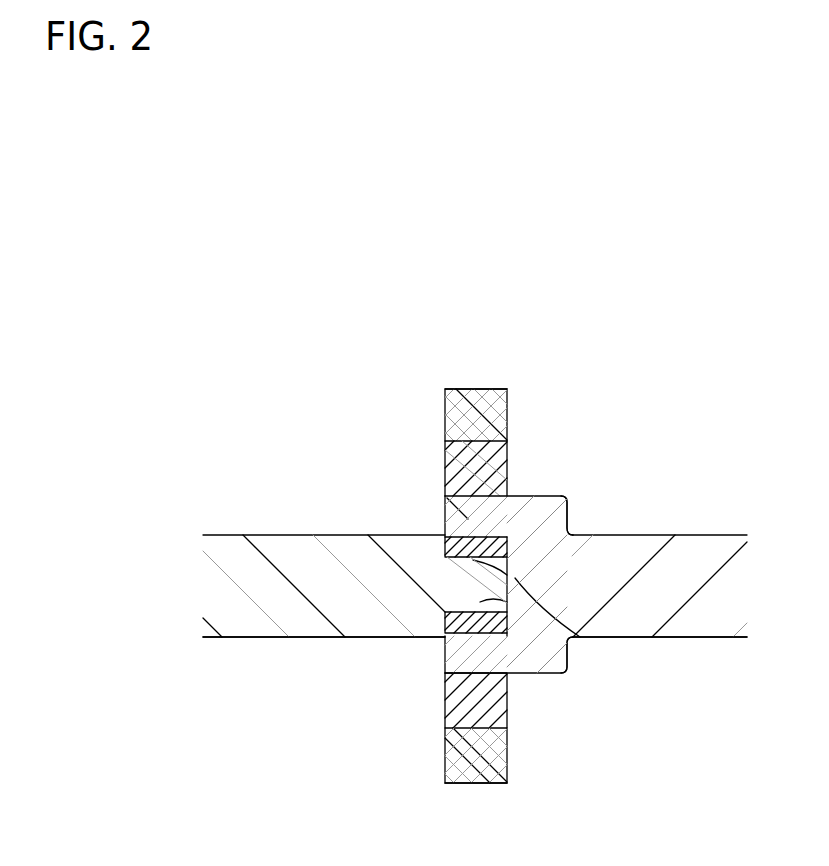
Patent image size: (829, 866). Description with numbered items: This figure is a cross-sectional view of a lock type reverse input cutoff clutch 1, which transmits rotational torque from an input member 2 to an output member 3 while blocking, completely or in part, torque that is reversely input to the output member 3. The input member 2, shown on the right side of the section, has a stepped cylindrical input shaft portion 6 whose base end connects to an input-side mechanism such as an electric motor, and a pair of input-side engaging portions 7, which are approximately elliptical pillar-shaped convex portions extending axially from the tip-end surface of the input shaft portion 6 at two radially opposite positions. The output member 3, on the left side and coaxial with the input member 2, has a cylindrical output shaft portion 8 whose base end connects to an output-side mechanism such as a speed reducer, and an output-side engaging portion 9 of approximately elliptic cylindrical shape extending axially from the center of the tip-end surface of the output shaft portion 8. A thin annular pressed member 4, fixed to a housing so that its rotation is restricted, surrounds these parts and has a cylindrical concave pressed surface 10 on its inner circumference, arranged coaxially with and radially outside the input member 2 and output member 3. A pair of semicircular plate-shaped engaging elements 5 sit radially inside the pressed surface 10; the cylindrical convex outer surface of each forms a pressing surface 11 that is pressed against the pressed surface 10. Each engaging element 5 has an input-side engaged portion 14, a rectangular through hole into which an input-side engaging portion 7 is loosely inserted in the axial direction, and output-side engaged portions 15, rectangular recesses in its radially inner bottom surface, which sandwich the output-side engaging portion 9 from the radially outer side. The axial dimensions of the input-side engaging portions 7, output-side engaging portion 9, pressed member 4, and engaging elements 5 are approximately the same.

The reverse input cutoff clutch 1 is at (499, 563).
The input member 2 is at (660, 535).
The output member 3 is at (298, 535).
The pressed member 4 is at (483, 388).
The engaging elements 5 is at (442, 450).
The input shaft portion 6 is at (700, 613).
The input-side engaging portions 7 is at (445, 495).
The output shaft portion 8 is at (270, 615).
The output-side engaging portion 9 is at (507, 585).
The pressed surface 10 is at (443, 718).
The pressing surface 11 is at (447, 388).
The input-side engaged portion 14 is at (518, 498).
The output-side engaged portions 15 is at (568, 518).